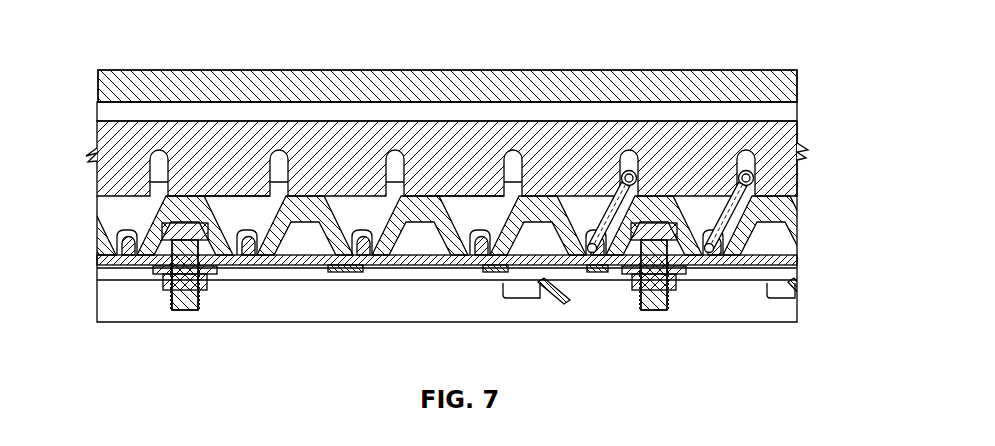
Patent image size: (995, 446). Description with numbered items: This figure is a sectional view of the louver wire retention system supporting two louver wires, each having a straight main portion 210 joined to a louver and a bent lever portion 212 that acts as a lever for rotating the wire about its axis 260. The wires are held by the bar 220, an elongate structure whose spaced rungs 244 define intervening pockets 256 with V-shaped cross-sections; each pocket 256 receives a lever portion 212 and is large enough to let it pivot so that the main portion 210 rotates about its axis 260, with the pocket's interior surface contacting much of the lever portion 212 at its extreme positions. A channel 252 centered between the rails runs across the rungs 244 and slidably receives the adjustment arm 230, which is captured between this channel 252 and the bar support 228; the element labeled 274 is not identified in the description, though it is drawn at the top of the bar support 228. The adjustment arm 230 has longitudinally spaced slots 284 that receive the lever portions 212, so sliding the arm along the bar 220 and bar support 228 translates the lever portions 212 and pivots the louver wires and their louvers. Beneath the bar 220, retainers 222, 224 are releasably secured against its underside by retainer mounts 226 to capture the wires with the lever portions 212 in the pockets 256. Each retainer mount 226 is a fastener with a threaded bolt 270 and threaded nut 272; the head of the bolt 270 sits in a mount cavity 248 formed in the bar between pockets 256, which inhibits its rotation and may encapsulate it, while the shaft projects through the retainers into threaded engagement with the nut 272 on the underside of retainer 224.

The main portion 210 is at (606, 252).
The lever portion 212 is at (743, 172).
The bar 220 is at (798, 197).
The retainer 222 is at (413, 243).
The retainer 224 is at (316, 283).
The retainer mount 226 is at (200, 312).
The bar support 228 is at (803, 80).
The adjustment arm 230 is at (97, 137).
The rung 244 is at (200, 192).
The mount cavity 248 is at (158, 216).
The channel 252 is at (462, 196).
The pocket 256 is at (578, 225).
The axis 260 is at (591, 253).
The threaded bolt 270 is at (97, 112).
The threaded nut 272 is at (158, 292).
The top layer 274 is at (125, 85).
The slot 284 is at (160, 150).